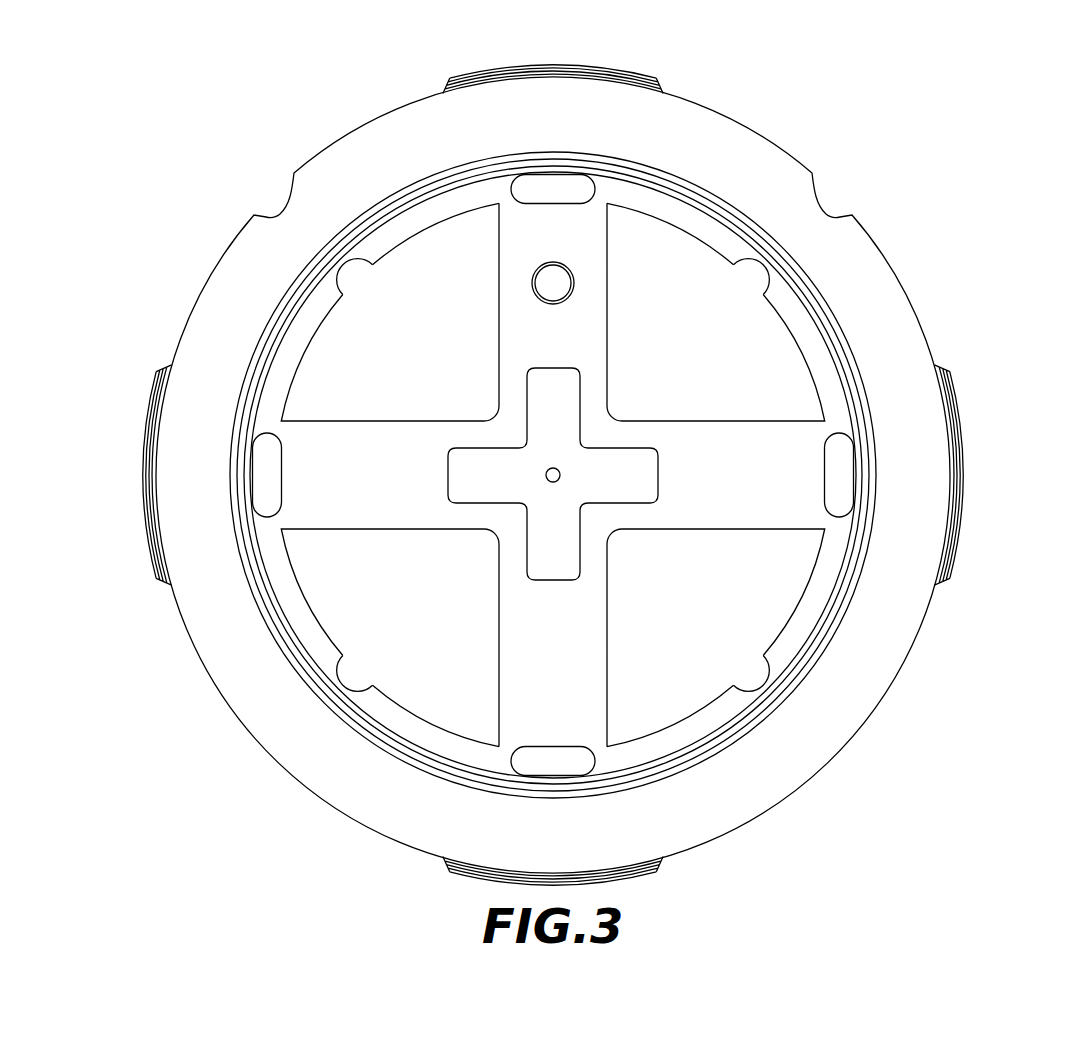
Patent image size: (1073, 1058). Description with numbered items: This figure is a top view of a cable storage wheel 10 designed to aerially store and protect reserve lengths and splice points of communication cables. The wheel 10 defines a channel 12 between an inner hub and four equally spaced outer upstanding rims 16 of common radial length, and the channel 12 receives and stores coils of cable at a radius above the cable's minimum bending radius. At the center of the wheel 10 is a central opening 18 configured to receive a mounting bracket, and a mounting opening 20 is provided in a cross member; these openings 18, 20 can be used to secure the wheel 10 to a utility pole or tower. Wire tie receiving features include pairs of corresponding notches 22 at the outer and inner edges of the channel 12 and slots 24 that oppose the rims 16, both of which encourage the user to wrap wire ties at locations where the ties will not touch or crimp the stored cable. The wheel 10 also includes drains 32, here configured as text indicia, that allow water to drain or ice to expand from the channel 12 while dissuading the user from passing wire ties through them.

The cable storage wheel 10 is at (841, 104).
The channel 12 is at (912, 432).
The outer upstanding rims 16 is at (612, 67).
The central opening 18 is at (553, 468).
The mounting opening 20 is at (553, 262).
The notches 22 is at (292, 198).
The slots 24 is at (532, 205).
The drains 32 is at (283, 230).